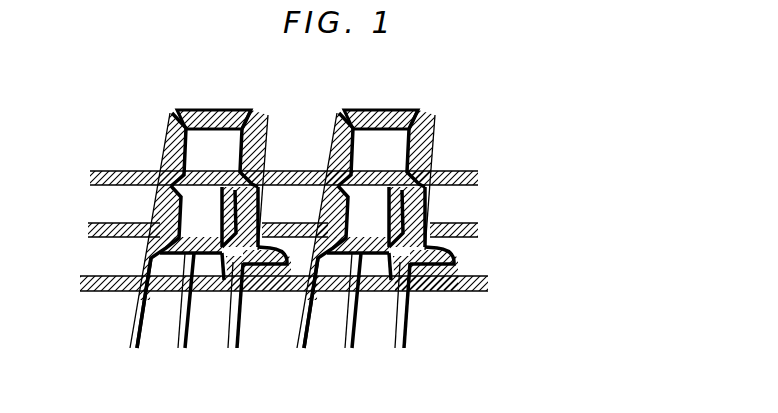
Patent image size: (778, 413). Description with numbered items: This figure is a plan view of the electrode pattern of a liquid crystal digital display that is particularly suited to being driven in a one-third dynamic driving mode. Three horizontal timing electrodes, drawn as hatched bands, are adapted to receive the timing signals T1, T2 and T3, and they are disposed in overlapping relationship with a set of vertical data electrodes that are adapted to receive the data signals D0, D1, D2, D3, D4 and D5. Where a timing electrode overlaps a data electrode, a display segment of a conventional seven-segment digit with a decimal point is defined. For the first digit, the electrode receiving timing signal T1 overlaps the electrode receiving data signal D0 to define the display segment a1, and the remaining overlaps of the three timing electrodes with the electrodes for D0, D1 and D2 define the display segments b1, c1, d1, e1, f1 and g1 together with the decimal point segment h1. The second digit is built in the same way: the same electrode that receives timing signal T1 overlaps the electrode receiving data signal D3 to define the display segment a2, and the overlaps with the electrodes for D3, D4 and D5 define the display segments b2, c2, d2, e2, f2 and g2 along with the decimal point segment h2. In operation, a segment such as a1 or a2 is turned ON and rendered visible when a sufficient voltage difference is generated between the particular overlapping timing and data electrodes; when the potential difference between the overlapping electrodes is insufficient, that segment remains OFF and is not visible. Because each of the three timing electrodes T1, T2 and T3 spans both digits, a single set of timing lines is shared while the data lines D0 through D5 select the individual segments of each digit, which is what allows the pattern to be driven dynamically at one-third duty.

The timing signal T1 is at (252, 179).
The timing signal T2 is at (252, 232).
The timing signal T3 is at (257, 286).
The display segment a1 is at (178, 153).
The display segment b1 is at (222, 127).
The display segment c1 is at (262, 148).
The display segment d1 is at (244, 207).
The display segment e1 is at (205, 258).
The display segment f1 is at (160, 210).
The display segment g1 is at (205, 192).
The display segment h1 is at (275, 290).
The display segment a2 is at (324, 230).
The display segment b2 is at (381, 105).
The display segment c2 is at (438, 180).
The display segment d2 is at (427, 217).
The display segment e2 is at (391, 276).
The display segment f2 is at (321, 267).
The display segment g2 is at (358, 222).
The display segment h2 is at (435, 289).
The data signal D0 is at (131, 322).
The data signal D1 is at (179, 320).
The data signal D2 is at (230, 324).
The data signal D3 is at (302, 322).
The data signal D4 is at (354, 320).
The data signal D5 is at (404, 324).